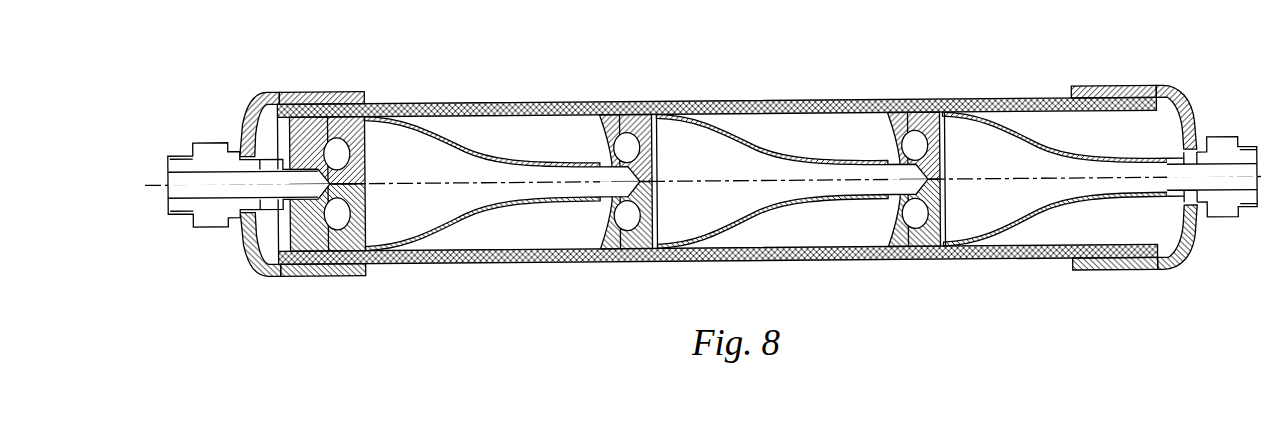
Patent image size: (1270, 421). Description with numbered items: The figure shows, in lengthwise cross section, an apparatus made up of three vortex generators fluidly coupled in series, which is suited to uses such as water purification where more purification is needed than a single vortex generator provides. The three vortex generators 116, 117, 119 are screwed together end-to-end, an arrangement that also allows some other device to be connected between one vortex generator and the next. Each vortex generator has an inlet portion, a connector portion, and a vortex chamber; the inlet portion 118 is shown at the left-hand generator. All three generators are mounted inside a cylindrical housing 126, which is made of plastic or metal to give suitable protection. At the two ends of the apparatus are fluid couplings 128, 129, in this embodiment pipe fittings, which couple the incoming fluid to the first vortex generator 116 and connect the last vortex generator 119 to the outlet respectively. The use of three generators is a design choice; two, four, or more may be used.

The first vortex generator 116 is at (503, 208).
The second vortex generator 117 is at (803, 208).
The inlet portion 118 is at (285, 253).
The last vortex generator 119 is at (1038, 220).
The cylindrical housing 126 is at (556, 103).
The fluid coupling 128 is at (320, 97).
The fluid coupling 129 is at (1118, 90).